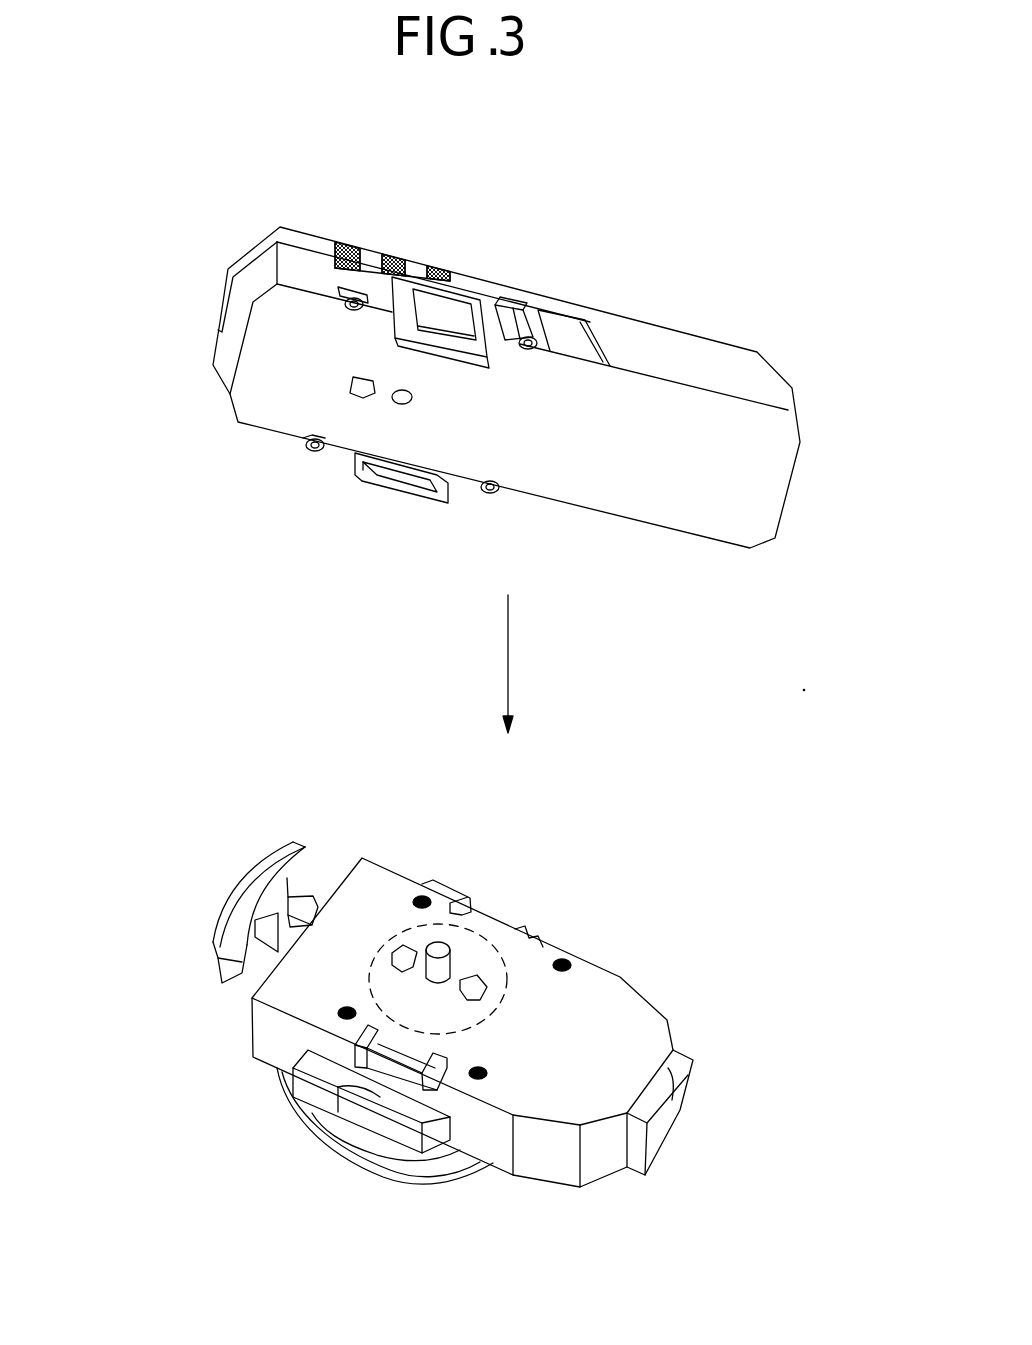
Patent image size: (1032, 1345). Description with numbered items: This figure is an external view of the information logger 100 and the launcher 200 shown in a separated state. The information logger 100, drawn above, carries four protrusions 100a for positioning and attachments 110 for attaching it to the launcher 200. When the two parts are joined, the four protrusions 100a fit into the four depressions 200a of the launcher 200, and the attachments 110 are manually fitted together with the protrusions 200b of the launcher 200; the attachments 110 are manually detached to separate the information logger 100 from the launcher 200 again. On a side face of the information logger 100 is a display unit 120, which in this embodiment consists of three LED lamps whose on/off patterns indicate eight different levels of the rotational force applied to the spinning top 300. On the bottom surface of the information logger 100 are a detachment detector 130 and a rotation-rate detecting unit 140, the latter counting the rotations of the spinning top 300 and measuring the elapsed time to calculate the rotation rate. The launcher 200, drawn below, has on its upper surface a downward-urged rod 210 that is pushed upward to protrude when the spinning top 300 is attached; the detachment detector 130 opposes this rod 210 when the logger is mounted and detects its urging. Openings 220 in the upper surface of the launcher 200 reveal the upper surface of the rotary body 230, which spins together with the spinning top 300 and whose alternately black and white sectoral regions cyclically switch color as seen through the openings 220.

The information logger 100 is at (558, 269).
The protrusions 100a is at (357, 297).
The attachments 110 is at (493, 303).
The display unit 120 is at (333, 240).
The detachment detector 130 is at (400, 404).
The rotation-rate detecting unit 140 is at (350, 398).
The launcher 200 is at (366, 860).
The depressions 200a is at (432, 948).
The protrusions 200b is at (476, 915).
The rod 210 is at (443, 945).
The openings 220 is at (400, 950).
The rotary body 230 is at (507, 932).
The spinning top 300 is at (320, 1138).